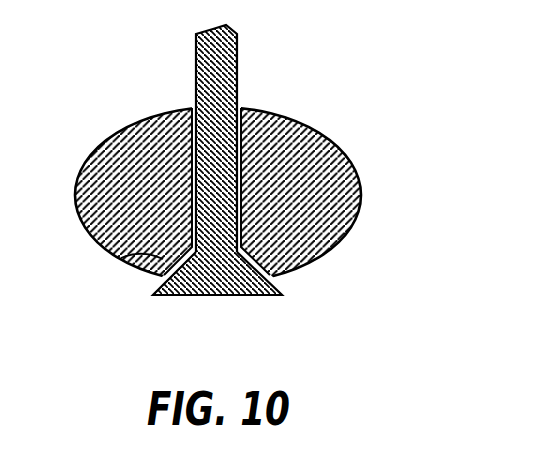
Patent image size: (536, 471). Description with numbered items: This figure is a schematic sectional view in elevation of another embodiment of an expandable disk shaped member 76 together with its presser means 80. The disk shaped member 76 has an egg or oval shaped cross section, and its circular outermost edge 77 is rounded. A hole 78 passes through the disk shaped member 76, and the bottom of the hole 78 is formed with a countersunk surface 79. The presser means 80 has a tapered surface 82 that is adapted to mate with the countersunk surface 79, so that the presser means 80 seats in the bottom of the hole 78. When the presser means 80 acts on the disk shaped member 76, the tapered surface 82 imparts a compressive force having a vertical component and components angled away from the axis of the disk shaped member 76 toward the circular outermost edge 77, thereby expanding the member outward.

The expandable disk shaped member 76 is at (244, 187).
The circular outermost edge 77 is at (123, 130).
The hole 78 is at (234, 126).
The countersunk surface 79 is at (238, 297).
The presser means 80 is at (203, 297).
The tapered surface 82 is at (121, 257).